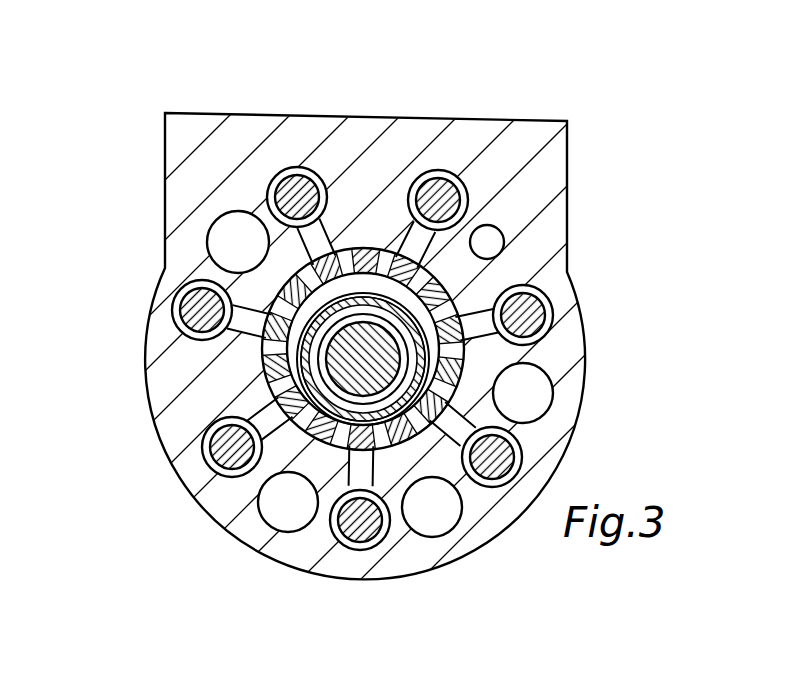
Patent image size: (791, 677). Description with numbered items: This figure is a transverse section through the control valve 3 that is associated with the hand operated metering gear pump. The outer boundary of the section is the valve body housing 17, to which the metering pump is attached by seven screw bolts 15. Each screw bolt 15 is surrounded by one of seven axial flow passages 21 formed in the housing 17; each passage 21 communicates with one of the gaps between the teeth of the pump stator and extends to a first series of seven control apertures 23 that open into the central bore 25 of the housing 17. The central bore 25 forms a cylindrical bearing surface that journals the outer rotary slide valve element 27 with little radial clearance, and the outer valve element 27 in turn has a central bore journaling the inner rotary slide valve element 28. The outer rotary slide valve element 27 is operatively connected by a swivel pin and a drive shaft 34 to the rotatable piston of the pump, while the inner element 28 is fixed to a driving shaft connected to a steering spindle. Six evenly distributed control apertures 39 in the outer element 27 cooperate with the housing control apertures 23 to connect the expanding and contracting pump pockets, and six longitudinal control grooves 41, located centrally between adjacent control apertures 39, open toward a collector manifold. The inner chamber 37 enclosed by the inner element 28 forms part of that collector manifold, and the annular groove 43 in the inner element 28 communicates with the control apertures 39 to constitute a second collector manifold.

The control valve 3 is at (600, 118).
The screw bolts 15 is at (425, 202).
The valve body housing 17 is at (463, 152).
The axial flow passages 21 is at (547, 302).
The control apertures 23 is at (485, 320).
The central bore 25 is at (458, 289).
The outer rotary slide valve element 27 is at (452, 355).
The inner rotary slide valve element 28 is at (365, 368).
The drive shaft 34 is at (330, 413).
The inner chamber 37 is at (337, 323).
The control apertures 39 is at (335, 258).
The longitudinal control grooves 41 is at (390, 257).
The annular groove 43 is at (340, 442).